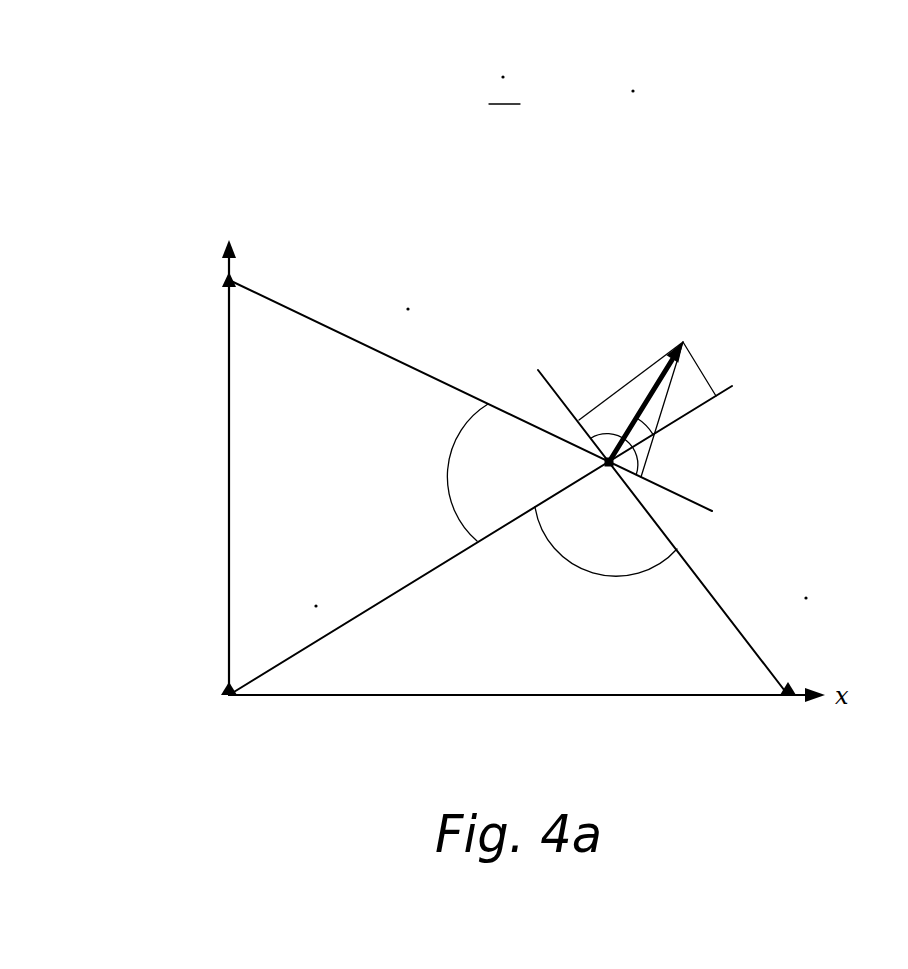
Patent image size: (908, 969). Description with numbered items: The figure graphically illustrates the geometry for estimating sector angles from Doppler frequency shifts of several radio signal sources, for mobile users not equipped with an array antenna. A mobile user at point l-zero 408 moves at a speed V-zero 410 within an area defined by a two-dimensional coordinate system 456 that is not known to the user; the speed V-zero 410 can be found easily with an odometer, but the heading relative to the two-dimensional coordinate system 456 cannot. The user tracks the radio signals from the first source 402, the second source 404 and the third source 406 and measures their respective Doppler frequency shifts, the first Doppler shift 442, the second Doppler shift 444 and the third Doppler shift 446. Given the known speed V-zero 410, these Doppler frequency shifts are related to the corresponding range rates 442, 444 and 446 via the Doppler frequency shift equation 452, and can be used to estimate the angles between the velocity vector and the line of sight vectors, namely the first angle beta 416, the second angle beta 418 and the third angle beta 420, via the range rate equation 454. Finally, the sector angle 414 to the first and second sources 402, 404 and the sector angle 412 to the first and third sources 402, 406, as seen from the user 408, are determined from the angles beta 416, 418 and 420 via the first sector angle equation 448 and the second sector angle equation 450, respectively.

The radio signal source s1 402 is at (195, 710).
The radio signal source s2 404 is at (778, 718).
The radio signal source s3 406 is at (192, 275).
The mobile user at l0 408 is at (550, 450).
The speed Vo 410 is at (677, 300).
The sector angle θ13 412 is at (397, 452).
The sector angle θ12 414 is at (592, 613).
The angle β1 416 is at (735, 350).
The angle β2 418 is at (578, 360).
The angle β3 420 is at (695, 463).
The Doppler frequency shift fd1 / range rate 442 is at (273, 588).
The Doppler frequency shift fd2 / range rate 444 is at (790, 582).
The Doppler frequency shift fd3 / range rate 446 is at (405, 290).
The equation for θ12 448 is at (278, 60).
The equation for θ13 450 is at (270, 152).
The Doppler frequency shift equation 452 is at (457, 68).
The range rate equation 454 is at (703, 77).
The 2D coordinate system 456 is at (227, 464).